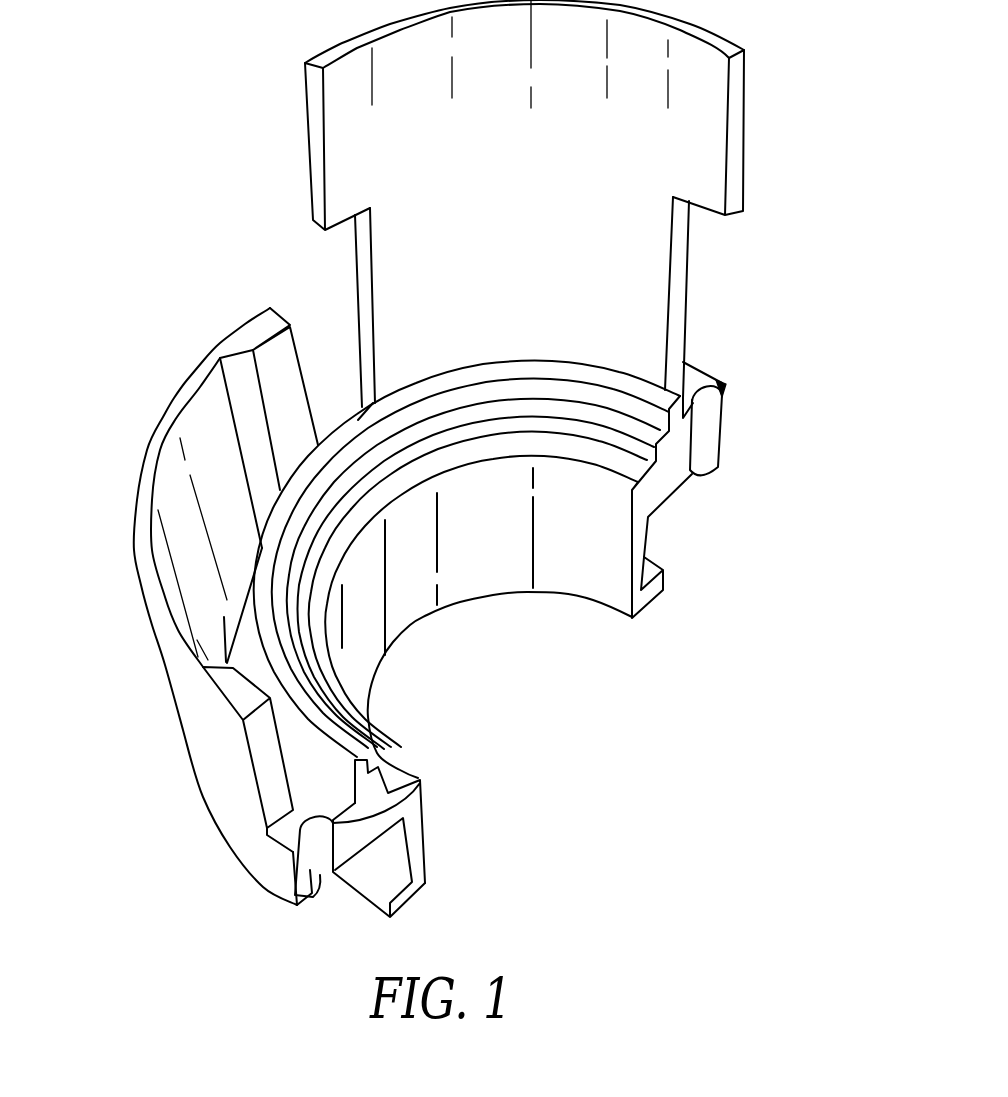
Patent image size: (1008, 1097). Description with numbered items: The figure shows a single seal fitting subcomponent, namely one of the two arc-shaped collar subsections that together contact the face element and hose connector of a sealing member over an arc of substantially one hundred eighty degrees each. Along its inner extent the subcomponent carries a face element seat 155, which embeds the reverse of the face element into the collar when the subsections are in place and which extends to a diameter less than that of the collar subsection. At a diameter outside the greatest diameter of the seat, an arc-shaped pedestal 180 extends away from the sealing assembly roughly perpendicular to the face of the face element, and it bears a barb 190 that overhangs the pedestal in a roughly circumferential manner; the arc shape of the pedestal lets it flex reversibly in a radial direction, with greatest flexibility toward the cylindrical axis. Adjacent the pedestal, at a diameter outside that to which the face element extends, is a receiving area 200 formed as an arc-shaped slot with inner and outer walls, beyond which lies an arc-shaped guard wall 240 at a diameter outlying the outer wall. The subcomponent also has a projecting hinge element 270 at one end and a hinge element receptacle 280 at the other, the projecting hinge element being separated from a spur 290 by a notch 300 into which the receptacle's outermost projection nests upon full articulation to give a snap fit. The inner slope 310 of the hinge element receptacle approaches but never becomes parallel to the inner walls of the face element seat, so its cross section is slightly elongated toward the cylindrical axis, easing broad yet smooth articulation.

The face element seat 155 is at (648, 545).
The arc-shaped pedestal 180 is at (677, 310).
The barb 190 is at (728, 155).
The receiving area 200 is at (257, 638).
The arc-shaped guard wall 240 is at (283, 681).
The projecting hinge element 270 is at (718, 450).
The hinge element receptacle 280 is at (318, 842).
The spur 290 is at (705, 368).
The notch 300 is at (723, 393).
The inner slope 310 is at (420, 782).